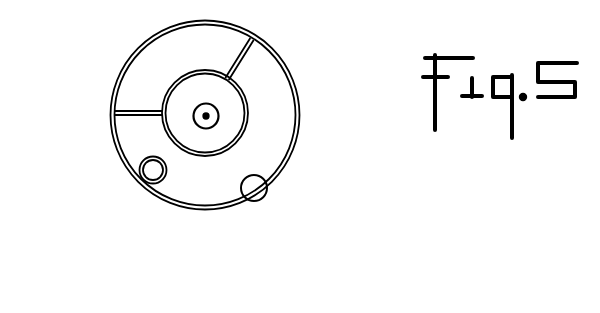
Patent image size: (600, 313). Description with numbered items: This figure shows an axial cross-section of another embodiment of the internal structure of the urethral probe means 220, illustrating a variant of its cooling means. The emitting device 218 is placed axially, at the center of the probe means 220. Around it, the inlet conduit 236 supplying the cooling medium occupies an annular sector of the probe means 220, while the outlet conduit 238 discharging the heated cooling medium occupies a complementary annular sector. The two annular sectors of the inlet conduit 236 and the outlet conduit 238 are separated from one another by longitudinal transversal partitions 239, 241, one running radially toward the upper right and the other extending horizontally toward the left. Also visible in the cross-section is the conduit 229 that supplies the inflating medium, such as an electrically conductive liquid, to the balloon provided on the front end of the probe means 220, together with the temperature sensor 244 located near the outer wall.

The emitting device 218 is at (217, 115).
The probe means 220 is at (297, 146).
The conduit supplying the inflating medium 229 is at (152, 172).
The inlet conduit 236 is at (150, 75).
The outlet conduit 238 is at (215, 182).
The longitudinal transversal partition 239 is at (241, 62).
The longitudinal transversal partition 241 is at (150, 121).
The temperature sensor 244 is at (257, 187).